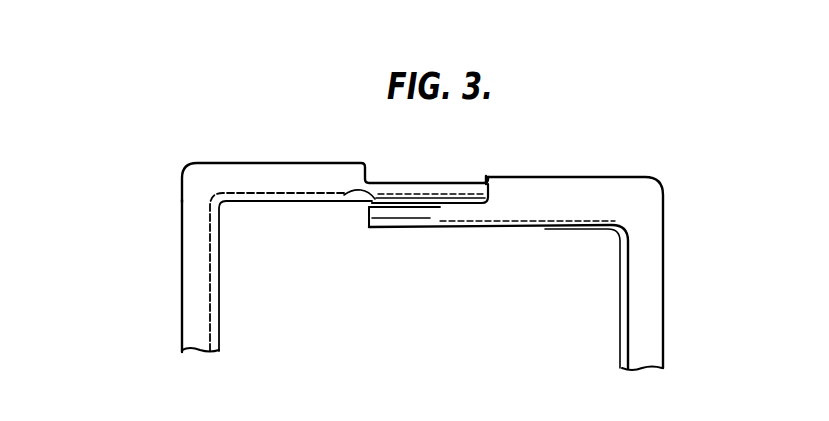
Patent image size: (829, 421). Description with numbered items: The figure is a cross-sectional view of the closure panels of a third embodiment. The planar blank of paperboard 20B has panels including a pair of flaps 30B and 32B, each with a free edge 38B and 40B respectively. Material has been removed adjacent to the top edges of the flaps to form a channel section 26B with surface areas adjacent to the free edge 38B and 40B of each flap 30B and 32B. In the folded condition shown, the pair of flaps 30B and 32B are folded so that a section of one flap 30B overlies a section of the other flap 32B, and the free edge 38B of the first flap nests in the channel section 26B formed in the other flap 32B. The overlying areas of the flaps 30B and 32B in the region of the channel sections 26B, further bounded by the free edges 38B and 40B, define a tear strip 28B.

The planar blank of paperboard 20B is at (192, 288).
The channel section 26B is at (385, 183).
The tear strip 28B is at (426, 188).
The flap 30B is at (257, 178).
The flap 32B is at (563, 190).
The free edge 38B is at (482, 177).
The free edge 40B is at (370, 209).